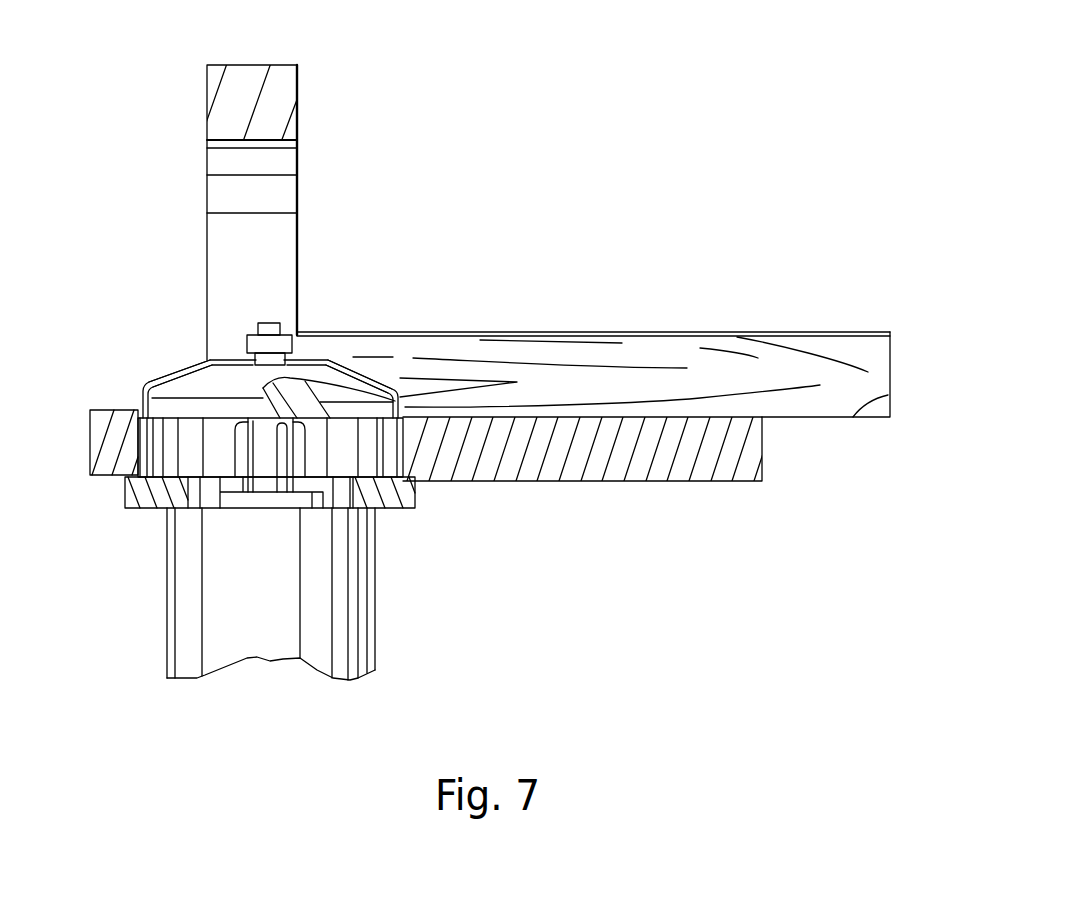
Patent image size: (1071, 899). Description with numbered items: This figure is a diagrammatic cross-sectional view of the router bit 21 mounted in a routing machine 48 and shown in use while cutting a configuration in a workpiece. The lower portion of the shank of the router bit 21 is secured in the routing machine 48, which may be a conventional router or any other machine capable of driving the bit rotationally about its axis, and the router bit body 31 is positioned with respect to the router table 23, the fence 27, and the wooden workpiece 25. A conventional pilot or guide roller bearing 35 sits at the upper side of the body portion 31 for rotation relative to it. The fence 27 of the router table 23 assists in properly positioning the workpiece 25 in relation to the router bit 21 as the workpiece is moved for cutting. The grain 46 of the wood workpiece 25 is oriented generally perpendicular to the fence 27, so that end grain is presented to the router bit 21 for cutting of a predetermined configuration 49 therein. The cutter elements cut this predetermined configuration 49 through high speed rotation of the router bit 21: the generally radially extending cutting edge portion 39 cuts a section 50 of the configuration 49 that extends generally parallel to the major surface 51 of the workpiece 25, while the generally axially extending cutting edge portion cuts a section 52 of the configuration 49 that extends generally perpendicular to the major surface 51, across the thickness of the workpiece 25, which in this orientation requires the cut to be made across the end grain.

The router bit 21 is at (163, 355).
The router table 23 is at (687, 473).
The wooden workpiece 25 is at (592, 302).
The fence 27 is at (273, 80).
The body portion 31 is at (183, 392).
The pilot or guide roller bearing 35 is at (240, 338).
The radially extending cutting edge portion 39 is at (190, 368).
The grain 46 is at (687, 368).
The routing machine 48 is at (318, 602).
The predetermined configuration 49 is at (398, 372).
The section of configuration 50 is at (328, 360).
The major surface 51 is at (490, 332).
The section of configuration 52 is at (405, 407).